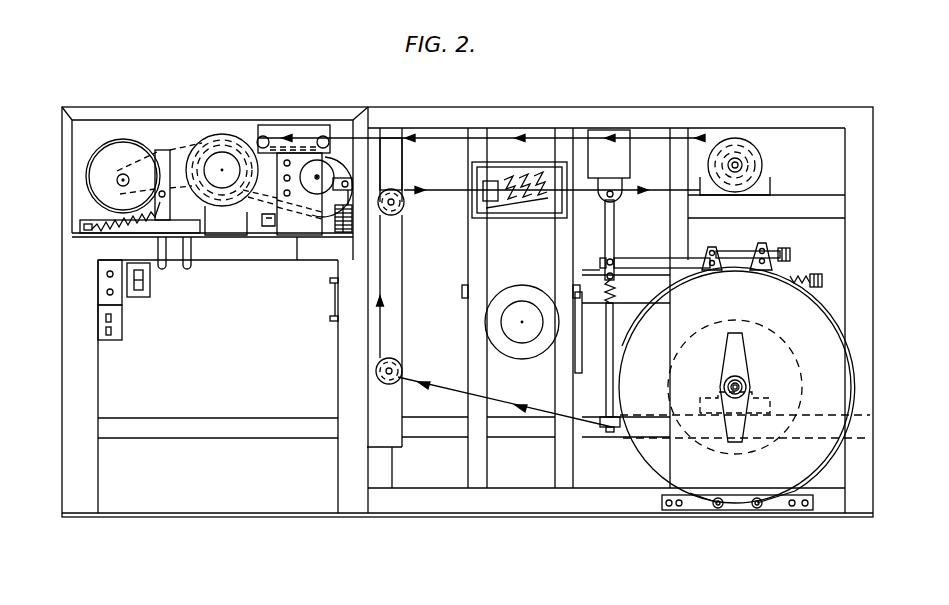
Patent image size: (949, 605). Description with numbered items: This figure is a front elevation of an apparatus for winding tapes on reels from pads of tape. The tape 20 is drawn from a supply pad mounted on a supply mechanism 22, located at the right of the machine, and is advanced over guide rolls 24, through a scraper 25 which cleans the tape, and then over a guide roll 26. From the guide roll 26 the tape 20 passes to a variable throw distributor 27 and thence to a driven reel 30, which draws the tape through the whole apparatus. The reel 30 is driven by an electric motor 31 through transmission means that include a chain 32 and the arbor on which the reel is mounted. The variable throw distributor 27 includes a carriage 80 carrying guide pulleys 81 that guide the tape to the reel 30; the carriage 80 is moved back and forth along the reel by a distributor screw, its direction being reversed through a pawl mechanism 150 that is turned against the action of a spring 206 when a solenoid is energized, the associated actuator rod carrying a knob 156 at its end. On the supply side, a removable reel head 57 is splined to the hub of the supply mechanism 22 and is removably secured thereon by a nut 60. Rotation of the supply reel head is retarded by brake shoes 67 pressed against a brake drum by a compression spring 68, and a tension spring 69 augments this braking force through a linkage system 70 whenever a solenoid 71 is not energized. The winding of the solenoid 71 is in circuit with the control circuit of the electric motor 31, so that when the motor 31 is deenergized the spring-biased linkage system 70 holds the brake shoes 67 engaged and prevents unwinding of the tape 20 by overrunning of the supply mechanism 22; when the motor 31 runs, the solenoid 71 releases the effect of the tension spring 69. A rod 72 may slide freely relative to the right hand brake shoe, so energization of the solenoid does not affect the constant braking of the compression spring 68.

The supply mechanism 22 is at (882, 270).
The electric motor 31 is at (120, 139).
The chain 32 is at (162, 150).
The driven reel 30 is at (225, 135).
The guide pulleys 81 is at (264, 136).
The carriage 80 is at (292, 127).
The variable throw distributor 27 is at (312, 112).
The spring 206 is at (340, 226).
The knob 156 is at (303, 186).
The pawl mechanism 150 is at (402, 164).
The guide rolls 24 is at (400, 210).
The tape 20 is at (440, 393).
The scraper 25 is at (539, 161).
The solenoid 71 is at (628, 173).
The linkage system 70 is at (613, 240).
The tension spring 69 is at (607, 304).
The guide roll 26 is at (762, 168).
The brake shoes 67 is at (710, 258).
The rod 72 is at (744, 252).
The compression spring 68 is at (803, 275).
The removable reel head 57 is at (853, 372).
The nut 60 is at (741, 366).